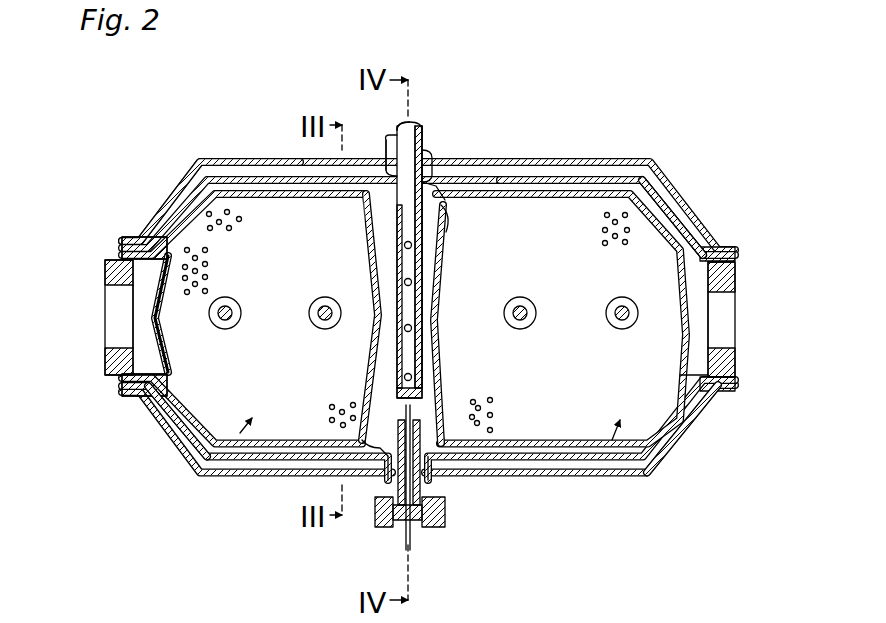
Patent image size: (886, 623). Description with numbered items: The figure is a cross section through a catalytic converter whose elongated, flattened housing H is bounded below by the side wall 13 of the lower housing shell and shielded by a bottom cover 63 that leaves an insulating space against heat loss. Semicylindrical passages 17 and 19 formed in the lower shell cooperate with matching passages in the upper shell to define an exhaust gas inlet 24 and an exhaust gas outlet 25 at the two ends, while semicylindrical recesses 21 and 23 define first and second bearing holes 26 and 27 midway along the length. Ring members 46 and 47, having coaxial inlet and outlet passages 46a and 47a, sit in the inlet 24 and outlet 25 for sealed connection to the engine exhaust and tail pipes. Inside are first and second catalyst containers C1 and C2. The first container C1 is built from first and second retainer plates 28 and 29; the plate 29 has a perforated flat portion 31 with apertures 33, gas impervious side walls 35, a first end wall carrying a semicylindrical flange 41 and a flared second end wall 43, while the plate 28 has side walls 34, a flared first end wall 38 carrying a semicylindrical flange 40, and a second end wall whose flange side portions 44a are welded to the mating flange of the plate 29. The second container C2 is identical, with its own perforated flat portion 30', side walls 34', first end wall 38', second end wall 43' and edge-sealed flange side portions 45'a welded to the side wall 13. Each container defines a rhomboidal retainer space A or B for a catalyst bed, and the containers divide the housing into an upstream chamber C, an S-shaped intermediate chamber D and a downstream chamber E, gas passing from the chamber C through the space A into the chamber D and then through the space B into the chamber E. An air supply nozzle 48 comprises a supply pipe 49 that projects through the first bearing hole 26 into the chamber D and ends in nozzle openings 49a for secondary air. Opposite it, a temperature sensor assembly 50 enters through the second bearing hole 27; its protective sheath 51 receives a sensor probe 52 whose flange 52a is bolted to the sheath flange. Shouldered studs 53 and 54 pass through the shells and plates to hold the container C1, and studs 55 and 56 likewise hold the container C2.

The side wall 13 is at (243, 180).
The semicylindrical passage 17 is at (150, 394).
The semicylindrical passage 19 is at (700, 247).
The semicylindrical recess 21 is at (428, 158).
The semicylindrical recess 23 is at (335, 460).
The exhaust gas inlet 24 is at (112, 275).
The exhaust gas outlet 25 is at (722, 330).
The first bearing hole 26 is at (396, 138).
The second bearing hole 27 is at (432, 470).
The first retainer plate 28 is at (590, 295).
The second retainer plate 29 is at (284, 295).
The outer shell end portion 30' is at (697, 186).
The perforated flat portion 31 is at (190, 456).
The apertures 33 is at (243, 220).
The side walls 34 is at (601, 154).
The side walls 34' is at (561, 391).
The side walls 35 is at (272, 192).
The first end wall 38 is at (85, 310).
The outlet pipe end 38' is at (741, 402).
The semicylindrical flange 40 is at (147, 243).
The semicylindrical flange 41 is at (135, 392).
The second end wall 43 is at (341, 317).
The right partition wall 43' is at (471, 324).
The flange side portions 44a is at (440, 186).
The flange side portions 45'a is at (495, 222).
The inlet ring member 46 is at (130, 248).
The inlet passage 46a is at (147, 360).
The outlet ring member 47 is at (732, 252).
The outlet passage 47a is at (722, 292).
The air supply nozzle 48 is at (420, 125).
The supply pipe 49 is at (414, 268).
The nozzle openings 49a is at (412, 372).
The temperature sensor assembly 50 is at (440, 520).
The protective sheath 51 is at (440, 480).
The sensor probe 52 is at (412, 530).
The flange 52a is at (388, 478).
The stud 53 is at (224, 322).
The stud 54 is at (325, 322).
The stud 55 is at (525, 320).
The stud 56 is at (615, 322).
The bottom cover 63 is at (600, 162).
The retainer space A is at (272, 418).
The retainer space B is at (600, 418).
The upstream chamber C is at (130, 378).
The first catalyst container C1 is at (240, 433).
The second catalyst container C2 is at (612, 440).
The intermediate chamber D is at (358, 216).
The downstream chamber E is at (705, 400).
The housing H is at (205, 163).